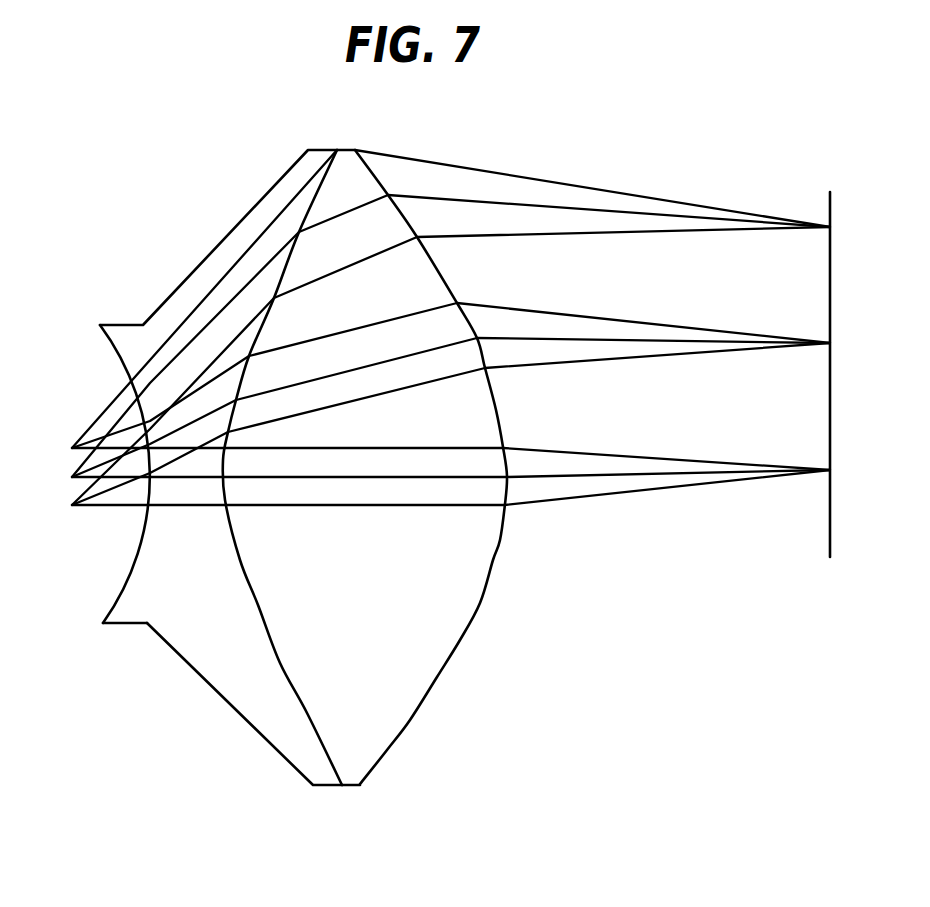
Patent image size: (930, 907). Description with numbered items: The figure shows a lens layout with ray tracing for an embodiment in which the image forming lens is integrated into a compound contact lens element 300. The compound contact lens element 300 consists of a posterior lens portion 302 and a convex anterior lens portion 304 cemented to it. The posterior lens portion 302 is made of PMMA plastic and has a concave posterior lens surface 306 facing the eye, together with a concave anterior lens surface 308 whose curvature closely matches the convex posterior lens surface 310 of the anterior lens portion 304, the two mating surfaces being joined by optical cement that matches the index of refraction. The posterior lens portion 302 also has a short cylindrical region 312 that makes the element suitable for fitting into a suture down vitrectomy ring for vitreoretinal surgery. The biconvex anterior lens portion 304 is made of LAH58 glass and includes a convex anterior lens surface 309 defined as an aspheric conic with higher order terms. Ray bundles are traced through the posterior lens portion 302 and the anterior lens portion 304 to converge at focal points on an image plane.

The compound contact lens element 300 is at (206, 190).
The posterior lens portion 302 is at (200, 469).
The anterior lens portion 304 is at (463, 467).
The concave entrance surface of first lens 306 is at (132, 560).
The concave anterior lens surface 308 is at (287, 660).
The convex anterior lens surface 309 is at (488, 587).
The posterior lens surface 310 is at (269, 467).
The short cylindrical region 312 is at (119, 627).